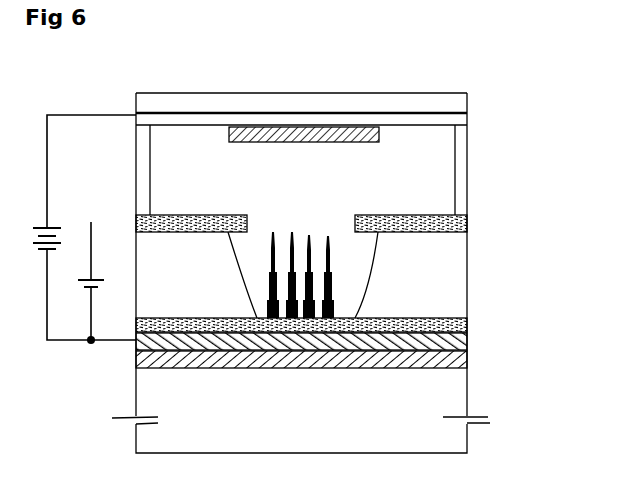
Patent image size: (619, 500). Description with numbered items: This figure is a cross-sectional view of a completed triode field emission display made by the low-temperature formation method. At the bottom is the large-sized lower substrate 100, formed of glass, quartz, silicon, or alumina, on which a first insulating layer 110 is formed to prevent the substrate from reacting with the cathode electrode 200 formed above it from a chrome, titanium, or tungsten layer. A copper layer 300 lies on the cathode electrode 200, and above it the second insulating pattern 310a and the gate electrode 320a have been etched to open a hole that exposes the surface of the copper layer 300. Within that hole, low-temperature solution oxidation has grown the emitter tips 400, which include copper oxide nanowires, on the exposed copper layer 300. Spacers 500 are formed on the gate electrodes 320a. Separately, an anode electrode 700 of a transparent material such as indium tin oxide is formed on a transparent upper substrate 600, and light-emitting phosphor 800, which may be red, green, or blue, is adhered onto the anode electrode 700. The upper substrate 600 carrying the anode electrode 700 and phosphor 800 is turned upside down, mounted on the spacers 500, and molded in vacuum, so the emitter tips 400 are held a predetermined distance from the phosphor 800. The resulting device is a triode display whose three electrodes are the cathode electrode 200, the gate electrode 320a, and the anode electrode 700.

The lower substrate 100 is at (463, 392).
The first insulating layer 110 is at (467, 362).
The cathode electrode 200 is at (467, 342).
The copper layer 300 is at (467, 323).
The second insulating pattern 310a is at (467, 275).
The gate electrode 320a is at (467, 225).
The emitter tips 400 is at (300, 248).
The spacers 500 is at (463, 172).
The upper substrate 600 is at (467, 104).
The anode electrode 700 is at (467, 121).
The phosphor 800 is at (343, 143).